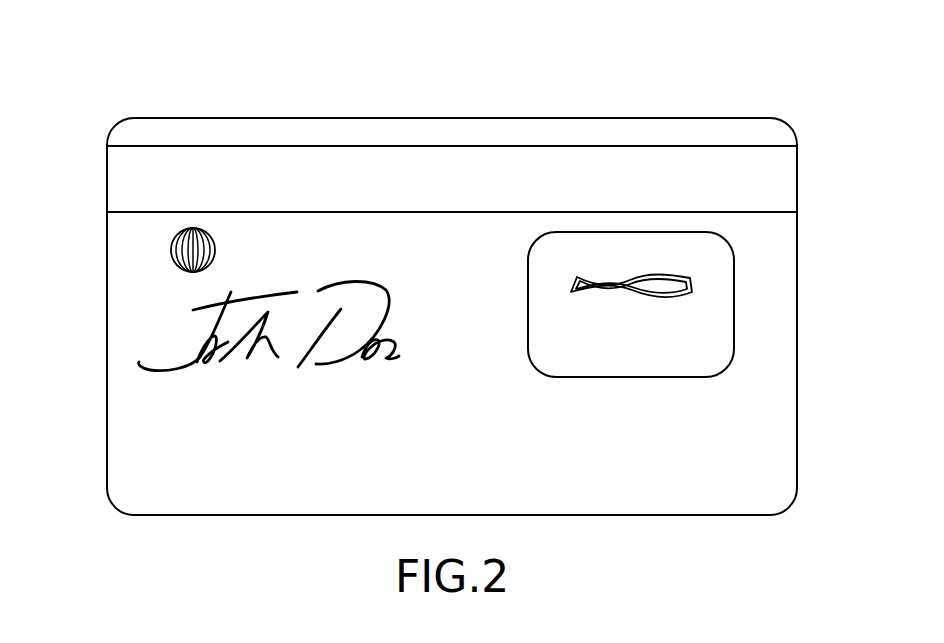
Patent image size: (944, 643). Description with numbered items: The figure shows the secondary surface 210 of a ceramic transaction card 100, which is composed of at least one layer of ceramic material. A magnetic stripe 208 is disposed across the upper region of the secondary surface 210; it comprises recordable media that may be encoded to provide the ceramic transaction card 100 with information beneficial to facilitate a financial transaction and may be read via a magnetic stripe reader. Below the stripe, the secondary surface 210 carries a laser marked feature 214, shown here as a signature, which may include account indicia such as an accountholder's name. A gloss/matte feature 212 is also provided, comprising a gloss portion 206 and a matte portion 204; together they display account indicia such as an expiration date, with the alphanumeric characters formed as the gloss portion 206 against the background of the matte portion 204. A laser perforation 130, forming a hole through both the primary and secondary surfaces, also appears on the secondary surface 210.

The ceramic transaction card 100 is at (126, 92).
The laser perforation 130 is at (174, 252).
The matte portion 204 is at (700, 290).
The gloss portion 206 is at (683, 323).
The magnetic stripe 208 is at (777, 177).
The secondary surface 210 is at (145, 317).
The gloss/matte feature 212 is at (650, 378).
The laser marked feature 214 is at (163, 367).